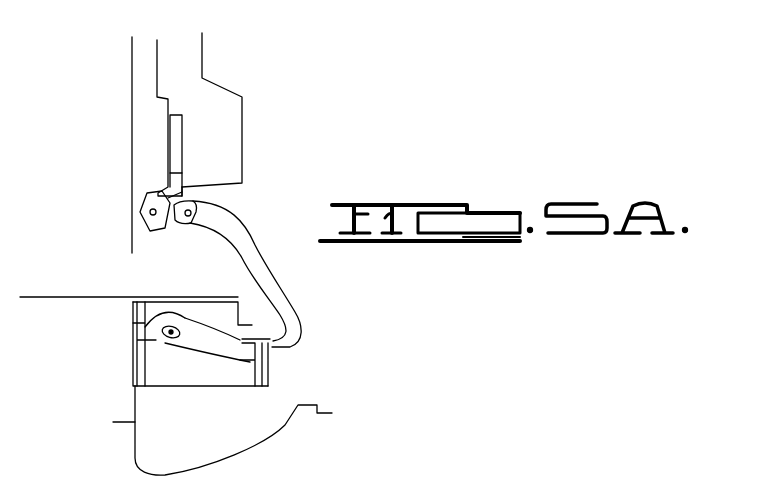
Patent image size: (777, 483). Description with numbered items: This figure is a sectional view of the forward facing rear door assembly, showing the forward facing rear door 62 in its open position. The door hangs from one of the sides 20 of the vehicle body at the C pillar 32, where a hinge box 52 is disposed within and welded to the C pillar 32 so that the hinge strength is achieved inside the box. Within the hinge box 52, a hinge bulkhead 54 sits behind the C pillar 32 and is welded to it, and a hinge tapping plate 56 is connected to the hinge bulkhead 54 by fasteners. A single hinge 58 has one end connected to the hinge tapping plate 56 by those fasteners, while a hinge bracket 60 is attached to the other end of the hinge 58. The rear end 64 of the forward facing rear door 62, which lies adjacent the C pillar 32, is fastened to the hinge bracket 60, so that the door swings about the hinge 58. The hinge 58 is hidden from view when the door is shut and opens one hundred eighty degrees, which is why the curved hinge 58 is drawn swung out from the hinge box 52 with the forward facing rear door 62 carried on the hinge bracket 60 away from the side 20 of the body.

The sides 20 is at (70, 297).
The C pillar 32 is at (215, 297).
The hinge box 52 is at (122, 360).
The hinge bulkhead 54 is at (131, 311).
The hinge tapping plate 56 is at (131, 370).
The hinge 58 is at (287, 291).
The hinge bracket 60 is at (187, 110).
The forward facing rear door 62 is at (132, 140).
The rear end 64 is at (242, 165).